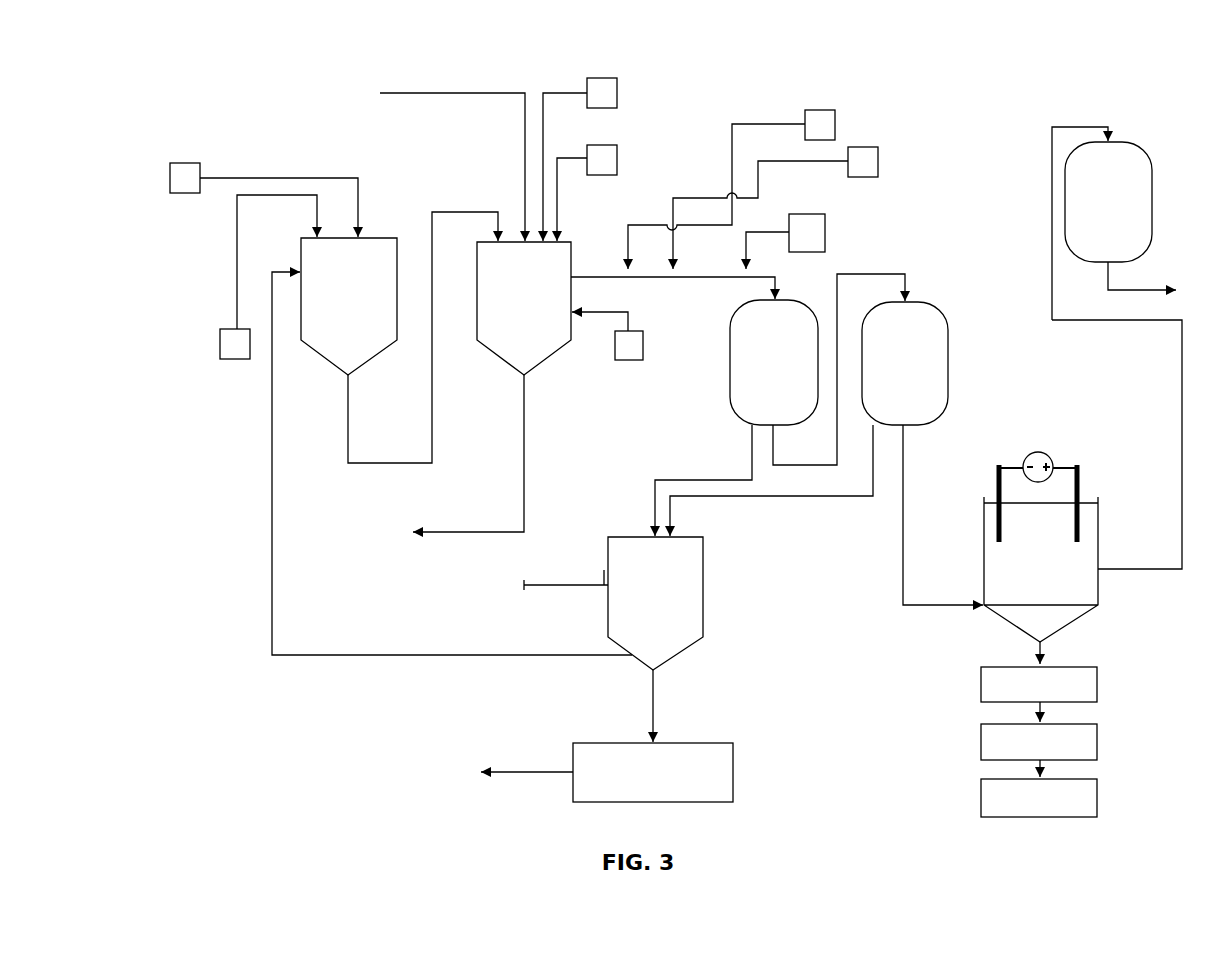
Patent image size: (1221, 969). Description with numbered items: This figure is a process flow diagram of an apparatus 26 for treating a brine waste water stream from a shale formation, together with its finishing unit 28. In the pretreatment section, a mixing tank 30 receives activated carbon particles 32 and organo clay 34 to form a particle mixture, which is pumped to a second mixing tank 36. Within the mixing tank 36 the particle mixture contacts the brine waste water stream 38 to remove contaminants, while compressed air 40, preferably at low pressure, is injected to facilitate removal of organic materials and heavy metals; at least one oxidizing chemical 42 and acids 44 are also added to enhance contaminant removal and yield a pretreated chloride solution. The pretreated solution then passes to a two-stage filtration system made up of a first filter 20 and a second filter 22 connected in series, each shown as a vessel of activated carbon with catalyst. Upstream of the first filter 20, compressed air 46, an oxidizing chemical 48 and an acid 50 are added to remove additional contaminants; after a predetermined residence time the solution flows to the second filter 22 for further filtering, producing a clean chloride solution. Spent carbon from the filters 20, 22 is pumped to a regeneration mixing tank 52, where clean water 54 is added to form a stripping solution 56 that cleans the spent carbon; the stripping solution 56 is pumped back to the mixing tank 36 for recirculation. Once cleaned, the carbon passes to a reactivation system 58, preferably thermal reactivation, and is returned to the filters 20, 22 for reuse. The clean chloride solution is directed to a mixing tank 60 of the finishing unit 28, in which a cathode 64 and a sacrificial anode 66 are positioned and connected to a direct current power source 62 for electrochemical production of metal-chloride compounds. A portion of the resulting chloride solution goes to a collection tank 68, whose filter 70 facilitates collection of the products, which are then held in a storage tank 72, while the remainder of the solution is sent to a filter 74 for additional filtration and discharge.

The first filter 20 is at (730, 348).
The second filter 22 is at (922, 305).
The apparatus 26 is at (216, 103).
The finishing unit 28 is at (1019, 298).
The mixing tank 30 is at (397, 255).
The activated carbon particles 32 is at (188, 163).
The organo clay 34 is at (237, 329).
The second mixing tank 36 is at (477, 256).
The brine waste water stream 38 is at (408, 93).
The compressed air 40 is at (587, 83).
The oxidizing chemical 42 is at (612, 175).
The acids 44 is at (643, 333).
The compressed air 46 is at (824, 110).
The oxidizing chemical 48 is at (805, 214).
The acid 50 is at (877, 147).
The regeneration mixing tank 52 is at (703, 562).
The clean water 54 is at (568, 585).
The stripping solution 56 is at (422, 652).
The reactivation system 58 is at (733, 772).
The mixing tank 60 is at (1003, 620).
The direct current power source 62 is at (1023, 462).
The cathode 64 is at (997, 516).
The sacrificial anode 66 is at (1080, 485).
The collection tank 68 is at (981, 682).
The filter 70 is at (981, 740).
The storage tank 72 is at (981, 795).
The filter 74 is at (1150, 158).